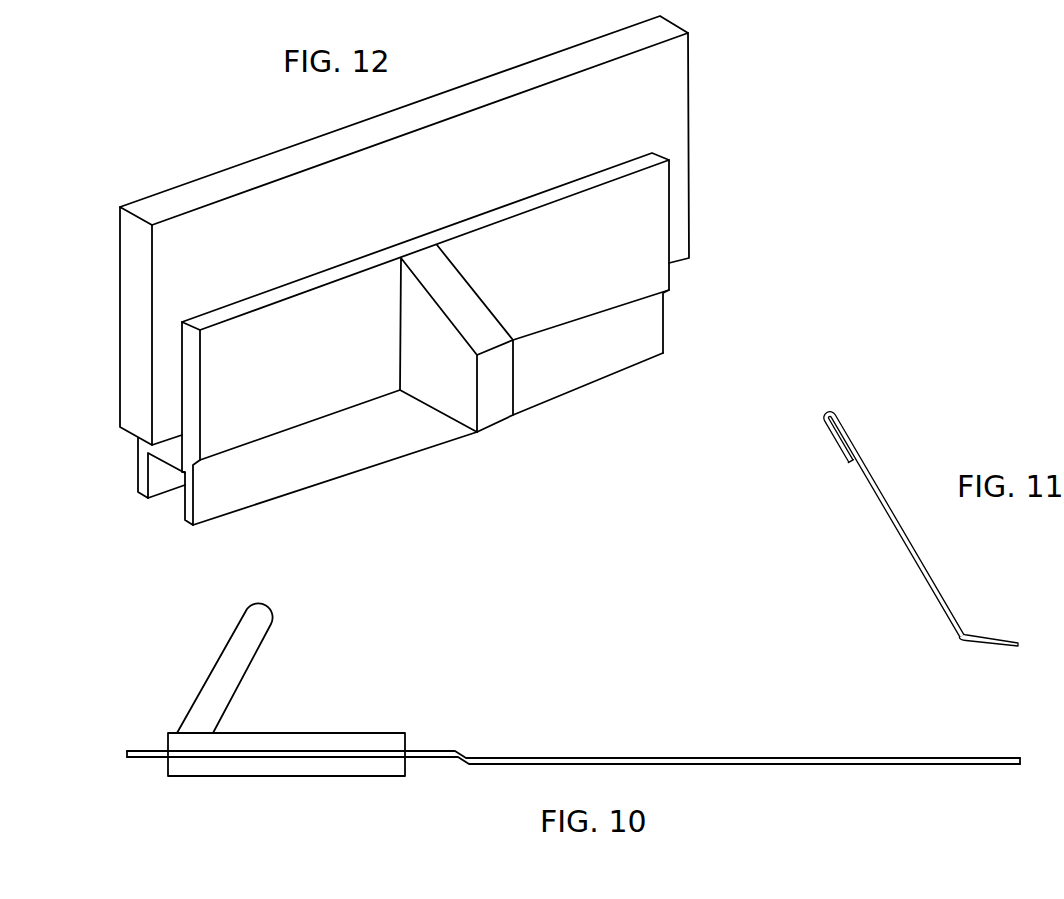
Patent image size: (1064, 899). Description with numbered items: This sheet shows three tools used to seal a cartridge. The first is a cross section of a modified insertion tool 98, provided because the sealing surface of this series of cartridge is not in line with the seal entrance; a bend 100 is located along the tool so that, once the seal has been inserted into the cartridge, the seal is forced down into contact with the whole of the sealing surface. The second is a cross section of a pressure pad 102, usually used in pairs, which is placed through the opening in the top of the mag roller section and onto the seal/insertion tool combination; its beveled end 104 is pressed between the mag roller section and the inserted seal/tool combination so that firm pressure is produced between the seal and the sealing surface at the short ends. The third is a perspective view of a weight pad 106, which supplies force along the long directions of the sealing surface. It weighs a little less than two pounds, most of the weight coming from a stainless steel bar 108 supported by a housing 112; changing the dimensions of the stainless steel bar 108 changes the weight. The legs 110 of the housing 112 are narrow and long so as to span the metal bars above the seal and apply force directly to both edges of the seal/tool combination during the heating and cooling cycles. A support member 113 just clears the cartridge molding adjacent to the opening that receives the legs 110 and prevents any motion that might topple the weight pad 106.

In FIG. 10, the 4000 series insertion tool 98 is at (285, 723).
In FIG. 10, the bend 100 is at (462, 755).
In FIG. 11, the pressure pad 102 is at (891, 535).
In FIG. 11, the beveled end 104 is at (985, 638).
In FIG. 12, the weight pad 106 is at (407, 286).
In FIG. 12, the stainless steel bar 108 is at (160, 212).
In FIG. 12, the legs 110 is at (193, 527).
In FIG. 12, the housing 112 is at (663, 319).
In FIG. 12, the support member 113 is at (492, 407).